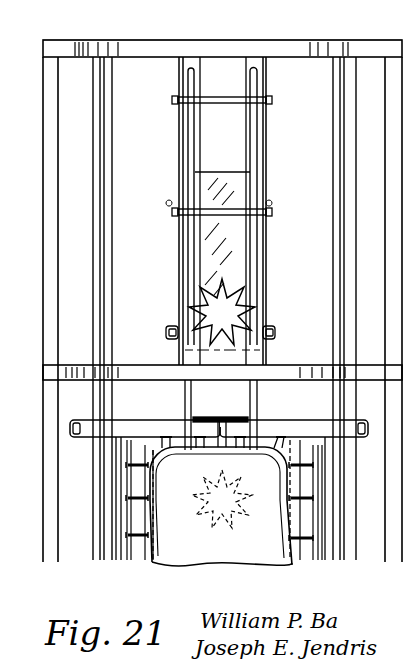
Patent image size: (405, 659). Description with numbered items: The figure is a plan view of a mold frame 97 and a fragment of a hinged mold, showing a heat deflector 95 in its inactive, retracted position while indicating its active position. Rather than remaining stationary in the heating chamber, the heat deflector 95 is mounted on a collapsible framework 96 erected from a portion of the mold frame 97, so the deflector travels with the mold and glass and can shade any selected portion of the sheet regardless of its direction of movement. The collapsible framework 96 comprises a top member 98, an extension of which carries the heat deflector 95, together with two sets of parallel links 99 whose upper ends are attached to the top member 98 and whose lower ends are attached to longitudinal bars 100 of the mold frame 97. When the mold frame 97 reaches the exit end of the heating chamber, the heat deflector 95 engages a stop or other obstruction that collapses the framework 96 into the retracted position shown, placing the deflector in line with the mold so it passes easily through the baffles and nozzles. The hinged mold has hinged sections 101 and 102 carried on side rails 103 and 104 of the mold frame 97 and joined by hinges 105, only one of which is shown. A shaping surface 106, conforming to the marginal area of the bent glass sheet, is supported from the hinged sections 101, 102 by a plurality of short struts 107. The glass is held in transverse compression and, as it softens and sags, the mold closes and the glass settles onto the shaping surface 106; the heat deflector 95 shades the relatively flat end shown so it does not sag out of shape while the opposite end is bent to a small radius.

The heat deflector 95 is at (200, 292).
The collapsible framework 96 is at (193, 186).
The mold frame 97 is at (183, 40).
The top member 98 is at (190, 160).
The parallel links 99 is at (181, 131).
The longitudinal bars 100 is at (181, 66).
The hinged section 101 is at (291, 428).
The hinged section 102 is at (135, 428).
The side rail 103 is at (340, 535).
The side rail 104 is at (100, 455).
The hinge 105 is at (222, 417).
The shaping surface 106 is at (285, 540).
The short struts 107 is at (133, 545).